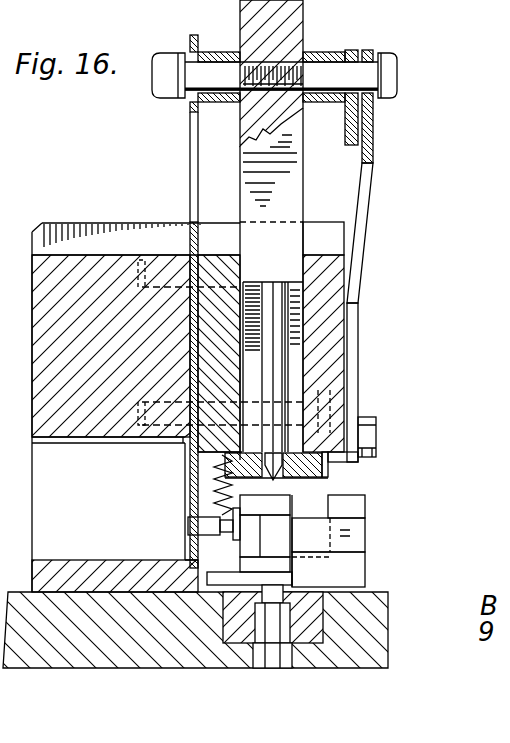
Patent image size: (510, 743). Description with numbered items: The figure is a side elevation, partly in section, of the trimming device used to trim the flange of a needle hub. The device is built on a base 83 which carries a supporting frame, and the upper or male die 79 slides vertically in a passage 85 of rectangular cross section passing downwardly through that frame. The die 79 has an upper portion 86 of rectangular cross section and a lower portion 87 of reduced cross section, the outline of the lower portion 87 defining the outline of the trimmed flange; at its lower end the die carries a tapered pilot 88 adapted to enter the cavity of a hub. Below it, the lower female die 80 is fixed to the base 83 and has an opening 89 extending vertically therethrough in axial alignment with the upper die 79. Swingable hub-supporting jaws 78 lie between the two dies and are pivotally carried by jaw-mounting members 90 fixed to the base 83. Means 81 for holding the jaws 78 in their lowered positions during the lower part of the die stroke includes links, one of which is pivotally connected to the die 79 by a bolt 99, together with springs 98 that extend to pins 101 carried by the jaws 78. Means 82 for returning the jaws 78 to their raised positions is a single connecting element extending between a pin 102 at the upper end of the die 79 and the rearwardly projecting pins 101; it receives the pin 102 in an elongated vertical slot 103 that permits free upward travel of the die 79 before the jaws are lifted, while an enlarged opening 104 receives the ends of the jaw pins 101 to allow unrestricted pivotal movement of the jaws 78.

The hub-supporting jaws 78 is at (272, 563).
The upper die 79 is at (305, 187).
The lower die 80 is at (313, 643).
The means for maintaining the jaws in spread-apart positions 81 is at (364, 248).
The means for returning the jaws to their raised positions 82 is at (192, 152).
The base 83 is at (202, 672).
The passage 85 is at (305, 362).
The upper portion of the upper die 86 is at (307, 17).
The lower portion of the upper die 87 is at (280, 333).
The tapered pilot 88 is at (278, 478).
The opening 89 is at (273, 600).
The jaw-mounting members 90 is at (352, 563).
The springs 98 is at (220, 480).
The bolt 99 is at (400, 72).
The pins 101 is at (188, 527).
The pin 102 is at (150, 82).
The elongated vertical slot 103 is at (192, 128).
The opening 104 is at (185, 488).